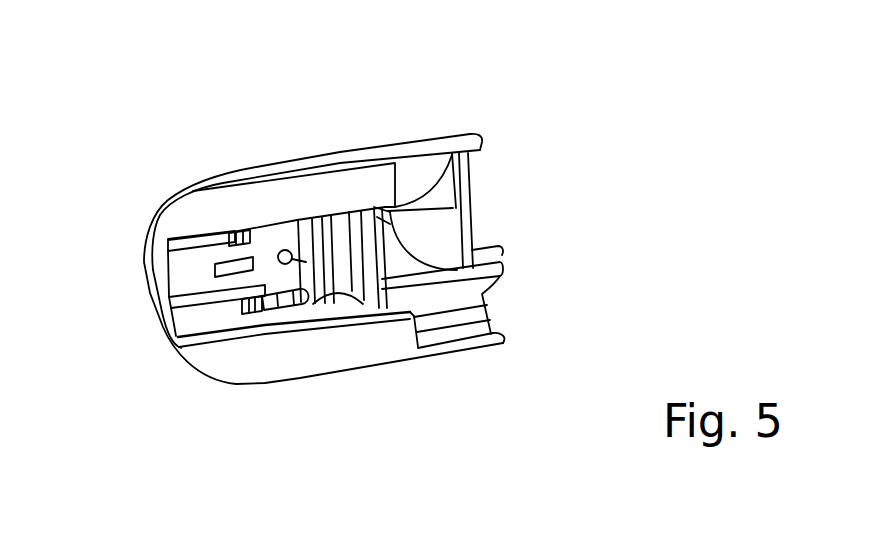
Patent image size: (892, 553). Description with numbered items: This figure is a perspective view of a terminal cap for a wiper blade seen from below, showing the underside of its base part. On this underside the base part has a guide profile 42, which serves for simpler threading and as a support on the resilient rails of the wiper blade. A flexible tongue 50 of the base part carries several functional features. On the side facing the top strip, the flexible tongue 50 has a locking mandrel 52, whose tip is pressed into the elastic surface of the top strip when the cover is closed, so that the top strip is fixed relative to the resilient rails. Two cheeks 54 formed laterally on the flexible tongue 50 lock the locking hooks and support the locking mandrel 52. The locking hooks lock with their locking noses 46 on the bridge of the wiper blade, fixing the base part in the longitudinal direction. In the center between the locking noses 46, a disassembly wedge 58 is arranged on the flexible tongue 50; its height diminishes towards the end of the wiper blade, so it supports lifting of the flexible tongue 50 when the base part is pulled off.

The guide profile 42 is at (352, 185).
The locking noses 46 is at (240, 231).
The flexible tongue 50 is at (190, 273).
The locking mandrel 52 is at (290, 250).
The cheeks 54 is at (293, 302).
The disassembly wedge 58 is at (232, 259).